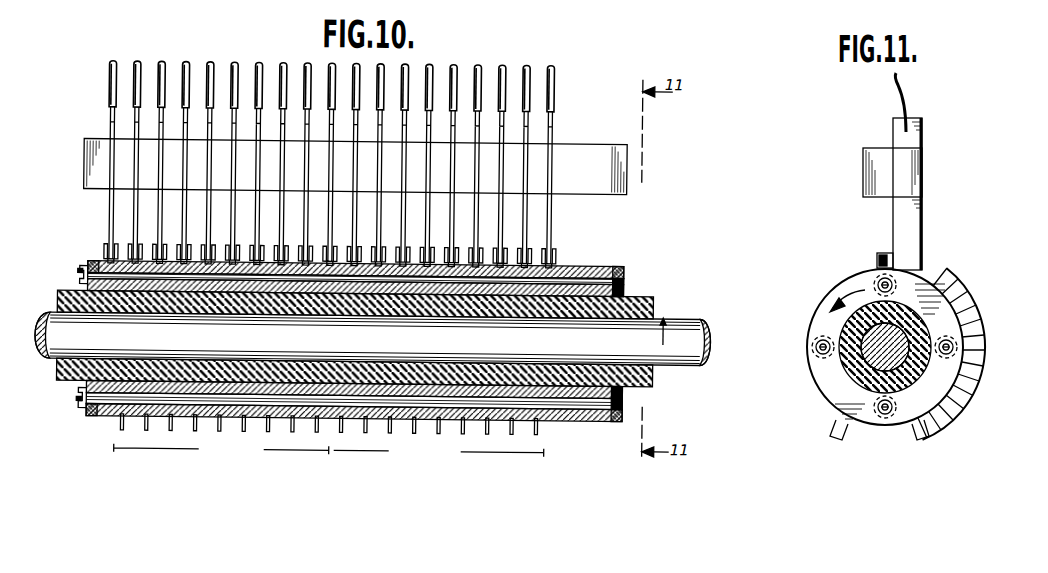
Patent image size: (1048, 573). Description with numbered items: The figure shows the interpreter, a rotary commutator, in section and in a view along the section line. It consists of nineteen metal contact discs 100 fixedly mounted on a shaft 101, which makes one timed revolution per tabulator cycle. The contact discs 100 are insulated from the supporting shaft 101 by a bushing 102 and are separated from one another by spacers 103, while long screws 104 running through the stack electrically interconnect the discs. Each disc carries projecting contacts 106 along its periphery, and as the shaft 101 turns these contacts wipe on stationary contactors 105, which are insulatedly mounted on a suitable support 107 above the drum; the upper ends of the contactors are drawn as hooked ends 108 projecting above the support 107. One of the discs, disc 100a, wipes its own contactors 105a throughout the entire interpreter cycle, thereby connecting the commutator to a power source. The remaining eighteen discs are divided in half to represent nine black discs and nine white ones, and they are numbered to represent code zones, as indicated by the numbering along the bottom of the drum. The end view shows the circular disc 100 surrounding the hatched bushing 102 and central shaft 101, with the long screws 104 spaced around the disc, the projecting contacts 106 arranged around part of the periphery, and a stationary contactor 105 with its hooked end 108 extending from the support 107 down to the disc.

In FIG. 10, the metal contact disc 100 is at (110, 260).
In FIG. 11, the metal contact disc 100 is at (808, 372).
In FIG. 10, the power disc 100a is at (566, 414).
In FIG. 10, the shaft 101 is at (668, 358).
In FIG. 11, the shaft 101 is at (852, 377).
In FIG. 10, the bushing 102 is at (653, 303).
In FIG. 11, the bushing 102 is at (848, 322).
In FIG. 10, the spacer 103 is at (564, 261).
In FIG. 10, the long screw 104 is at (77, 273).
In FIG. 11, the long screw 104 is at (878, 272).
In FIG. 10, the stationary contactor 105 is at (133, 214).
In FIG. 11, the stationary contactor 105 is at (910, 222).
In FIG. 10, the power disc contactor 105a is at (554, 215).
In FIG. 10, the projecting contact 106 is at (564, 246).
In FIG. 11, the projecting contact 106 is at (982, 352).
In FIG. 10, the support 107 is at (588, 144).
In FIG. 11, the support 107 is at (866, 188).
In FIG. 10, the hooked pin ends 108 is at (255, 75).
In FIG. 11, the hooked pin ends 108 is at (898, 98).